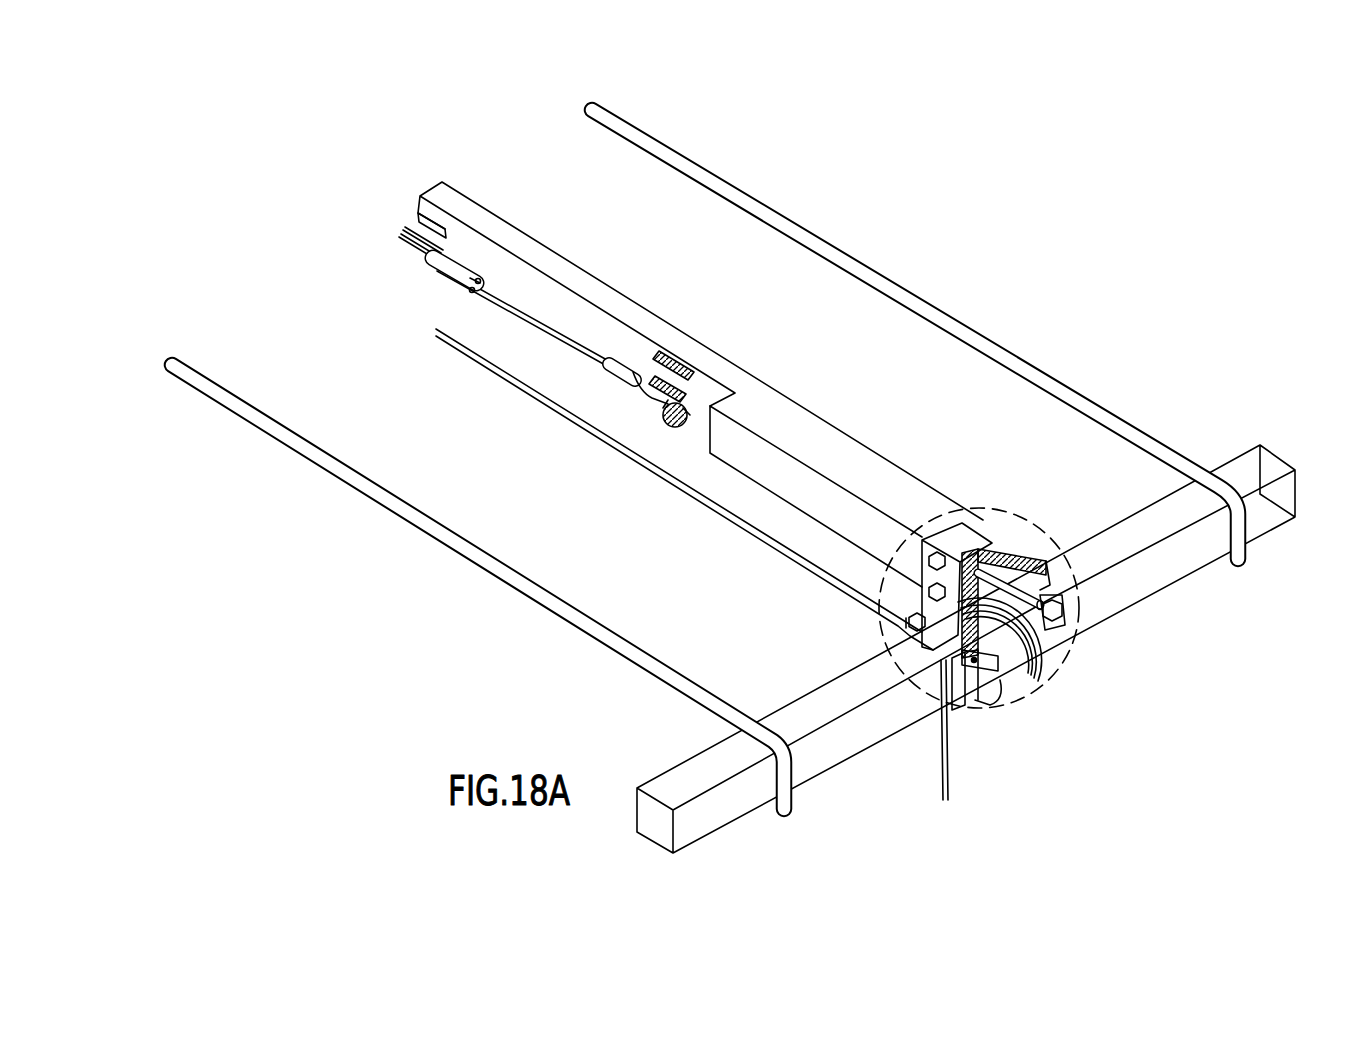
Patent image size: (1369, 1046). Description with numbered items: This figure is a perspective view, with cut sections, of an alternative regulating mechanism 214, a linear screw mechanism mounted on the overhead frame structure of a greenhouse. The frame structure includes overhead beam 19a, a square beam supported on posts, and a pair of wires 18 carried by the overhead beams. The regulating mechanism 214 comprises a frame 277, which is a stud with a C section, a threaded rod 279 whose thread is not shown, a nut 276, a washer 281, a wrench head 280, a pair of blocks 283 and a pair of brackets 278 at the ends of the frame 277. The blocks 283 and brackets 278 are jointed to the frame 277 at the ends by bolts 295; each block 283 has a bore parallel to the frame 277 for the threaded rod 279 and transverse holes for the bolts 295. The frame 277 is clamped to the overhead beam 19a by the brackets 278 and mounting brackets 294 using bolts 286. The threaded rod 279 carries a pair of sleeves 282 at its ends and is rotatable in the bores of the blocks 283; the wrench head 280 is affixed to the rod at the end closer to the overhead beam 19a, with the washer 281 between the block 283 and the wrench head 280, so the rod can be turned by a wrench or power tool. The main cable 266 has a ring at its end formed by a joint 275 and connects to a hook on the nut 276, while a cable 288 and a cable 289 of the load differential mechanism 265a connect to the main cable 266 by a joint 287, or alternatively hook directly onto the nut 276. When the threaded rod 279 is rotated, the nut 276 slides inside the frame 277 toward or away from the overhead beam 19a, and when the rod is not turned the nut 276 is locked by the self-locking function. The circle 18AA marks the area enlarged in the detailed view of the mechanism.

The wires 18 is at (758, 212).
The overhead beam 19a is at (1235, 478).
The regulating mechanism 214 is at (804, 360).
The frame 277 is at (827, 443).
The threaded rod 279 is at (418, 220).
The cable 288 is at (410, 228).
The main cable 266 is at (407, 237).
The cable 289 is at (400, 243).
The joint 287 is at (450, 268).
The joint 275 is at (622, 368).
The nut 276 is at (677, 427).
The brackets 278 is at (970, 527).
The bolts 295 is at (927, 592).
The bolts 286 is at (906, 620).
The sleeves 282 is at (990, 560).
The wrench head 280 is at (1067, 593).
The washer 281 is at (1032, 585).
The blocks 283 is at (1048, 568).
The mounting brackets 294 is at (963, 692).
The load differential mechanism 265a is at (1030, 697).
The cycle 18AA is at (1078, 684).